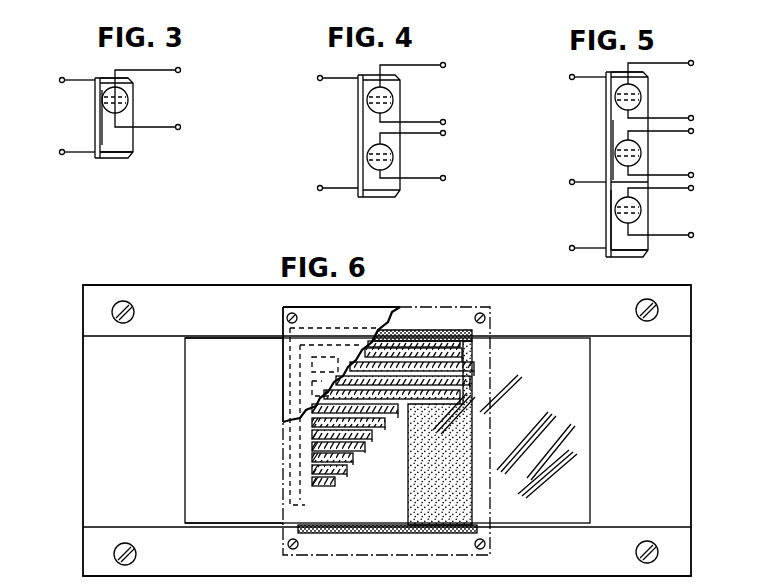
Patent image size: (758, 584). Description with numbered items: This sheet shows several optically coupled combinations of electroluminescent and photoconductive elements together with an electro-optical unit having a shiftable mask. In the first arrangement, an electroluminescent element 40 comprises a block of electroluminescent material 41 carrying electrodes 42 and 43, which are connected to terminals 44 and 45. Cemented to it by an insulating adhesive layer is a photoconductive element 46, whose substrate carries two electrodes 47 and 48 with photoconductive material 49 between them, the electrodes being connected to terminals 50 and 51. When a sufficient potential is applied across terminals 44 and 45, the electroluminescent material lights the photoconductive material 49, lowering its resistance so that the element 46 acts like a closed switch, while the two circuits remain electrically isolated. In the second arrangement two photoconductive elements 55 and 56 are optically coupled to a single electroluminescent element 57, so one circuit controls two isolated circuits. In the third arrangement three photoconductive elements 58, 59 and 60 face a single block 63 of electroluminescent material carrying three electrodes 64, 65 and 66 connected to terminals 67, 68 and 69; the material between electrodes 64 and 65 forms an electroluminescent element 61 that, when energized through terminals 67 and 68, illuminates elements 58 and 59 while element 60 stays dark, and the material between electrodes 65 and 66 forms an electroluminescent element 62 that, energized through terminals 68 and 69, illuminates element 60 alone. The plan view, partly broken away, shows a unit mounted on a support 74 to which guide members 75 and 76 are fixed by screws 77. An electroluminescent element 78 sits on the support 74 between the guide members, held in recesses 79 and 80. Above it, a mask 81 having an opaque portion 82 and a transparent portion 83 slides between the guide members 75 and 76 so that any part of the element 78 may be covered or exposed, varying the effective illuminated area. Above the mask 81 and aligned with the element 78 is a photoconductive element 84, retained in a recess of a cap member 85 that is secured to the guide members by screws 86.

In FIG. 3, the electroluminescent element 40 is at (136, 140).
In FIG. 3, the electroluminescent material 41 is at (105, 128).
In FIG. 3, the electrode 42 is at (113, 80).
In FIG. 3, the electrode 43 is at (115, 155).
In FIG. 3, the terminal 44 is at (60, 79).
In FIG. 3, the terminal 45 is at (60, 152).
In FIG. 3, the photoconductive element 46 is at (130, 92).
In FIG. 3, the electrode 47 is at (102, 97).
In FIG. 3, the electrode 48 is at (128, 107).
In FIG. 3, the photoconductive material 49 is at (128, 100).
In FIG. 3, the terminal 50 is at (181, 70).
In FIG. 3, the terminal 51 is at (181, 127).
In FIG. 4, the photoconductive element 55 is at (395, 91).
In FIG. 4, the photoconductive element 56 is at (396, 166).
In FIG. 4, the electroluminescent element 57 is at (356, 126).
In FIG. 5, the photoconductive element 58 is at (643, 100).
In FIG. 5, the photoconductive element 59 is at (643, 152).
In FIG. 5, the photoconductive element 60 is at (645, 218).
In FIG. 5, the electroluminescent element 61 is at (605, 126).
In FIG. 5, the electroluminescent element 62 is at (605, 234).
In FIG. 5, the block 63 is at (612, 155).
In FIG. 5, the electrode 64 is at (622, 72).
In FIG. 5, the electrode 65 is at (620, 188).
In FIG. 5, the electrode 66 is at (648, 250).
In FIG. 5, the terminal 67 is at (569, 77).
In FIG. 5, the terminal 68 is at (569, 182).
In FIG. 5, the terminal 69 is at (569, 249).
In FIG. 6, the support 74 is at (691, 396).
In FIG. 6, the guide member 75 is at (691, 550).
In FIG. 6, the guide member 76 is at (691, 306).
In FIG. 6, the screws 77 is at (135, 312).
In FIG. 6, the electroluminescent element 78 is at (478, 514).
In FIG. 6, the recess 79 is at (368, 535).
In FIG. 6, the recess 80 is at (428, 328).
In FIG. 6, the mask 81 is at (183, 450).
In FIG. 6, the opaque portion 82 is at (195, 490).
In FIG. 6, the transparent portion 83 is at (572, 403).
In FIG. 6, the photoconductive element 84 is at (292, 468).
In FIG. 6, the cap member 85 is at (367, 315).
In FIG. 6, the screws 86 is at (285, 317).